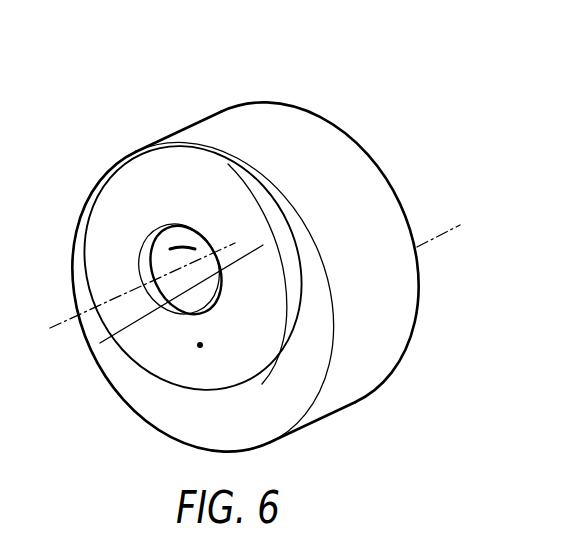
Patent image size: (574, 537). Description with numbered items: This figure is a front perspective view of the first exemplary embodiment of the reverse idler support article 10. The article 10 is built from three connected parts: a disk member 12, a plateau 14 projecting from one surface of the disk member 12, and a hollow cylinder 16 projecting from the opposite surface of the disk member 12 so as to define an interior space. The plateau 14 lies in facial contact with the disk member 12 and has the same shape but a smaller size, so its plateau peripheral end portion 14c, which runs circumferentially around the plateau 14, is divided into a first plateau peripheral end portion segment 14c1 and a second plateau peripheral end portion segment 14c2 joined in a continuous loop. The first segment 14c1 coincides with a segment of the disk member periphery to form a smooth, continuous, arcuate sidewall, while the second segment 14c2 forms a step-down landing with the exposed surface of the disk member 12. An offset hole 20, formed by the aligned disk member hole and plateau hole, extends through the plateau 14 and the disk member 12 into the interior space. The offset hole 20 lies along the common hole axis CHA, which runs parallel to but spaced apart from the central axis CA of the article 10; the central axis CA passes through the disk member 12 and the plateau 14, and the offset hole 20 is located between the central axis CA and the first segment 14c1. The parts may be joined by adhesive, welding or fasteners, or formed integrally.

The reverse idler support article 10 is at (458, 252).
The disk member 12 is at (172, 412).
The plateau 14 is at (115, 193).
The plateau peripheral end portion 14c is at (100, 343).
The first plateau peripheral end portion segment 14c1 is at (128, 155).
The second plateau peripheral end portion segment 14c2 is at (283, 343).
The hollow cylinder 16 is at (285, 123).
The offset hole 20 is at (183, 246).
The central axis CA is at (198, 346).
The common hole axis CHA is at (387, 172).